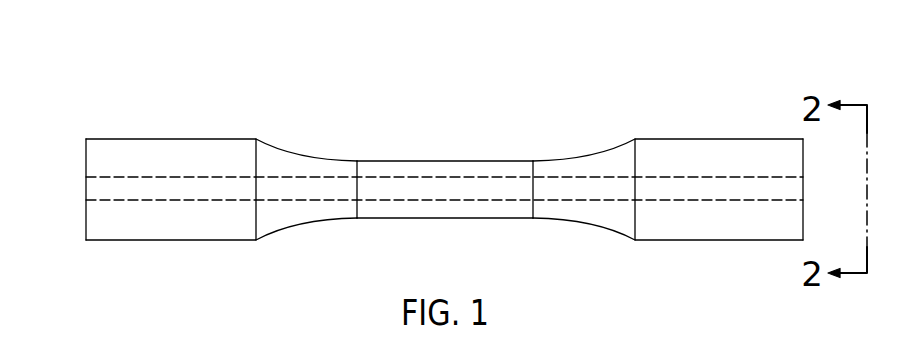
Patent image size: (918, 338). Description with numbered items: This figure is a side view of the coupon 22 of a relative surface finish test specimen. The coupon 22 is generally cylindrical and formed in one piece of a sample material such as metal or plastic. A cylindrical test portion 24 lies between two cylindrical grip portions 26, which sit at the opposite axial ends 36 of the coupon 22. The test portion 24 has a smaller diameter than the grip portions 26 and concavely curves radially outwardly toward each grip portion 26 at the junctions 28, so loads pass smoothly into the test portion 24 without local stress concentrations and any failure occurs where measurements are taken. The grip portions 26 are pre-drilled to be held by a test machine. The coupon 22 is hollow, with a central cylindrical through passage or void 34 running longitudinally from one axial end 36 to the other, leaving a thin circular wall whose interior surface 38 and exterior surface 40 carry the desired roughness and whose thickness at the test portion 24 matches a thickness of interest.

The coupon 22 is at (444, 159).
The cylindrical test portion 24 is at (445, 160).
The cylindrical grip portions 26 is at (165, 240).
The junctions 28 is at (272, 139).
The central cylindrical through passage or void 34 is at (97, 192).
The axial ends 36 is at (86, 229).
The interior surface 38 is at (588, 200).
The exterior surface 40 is at (392, 165).